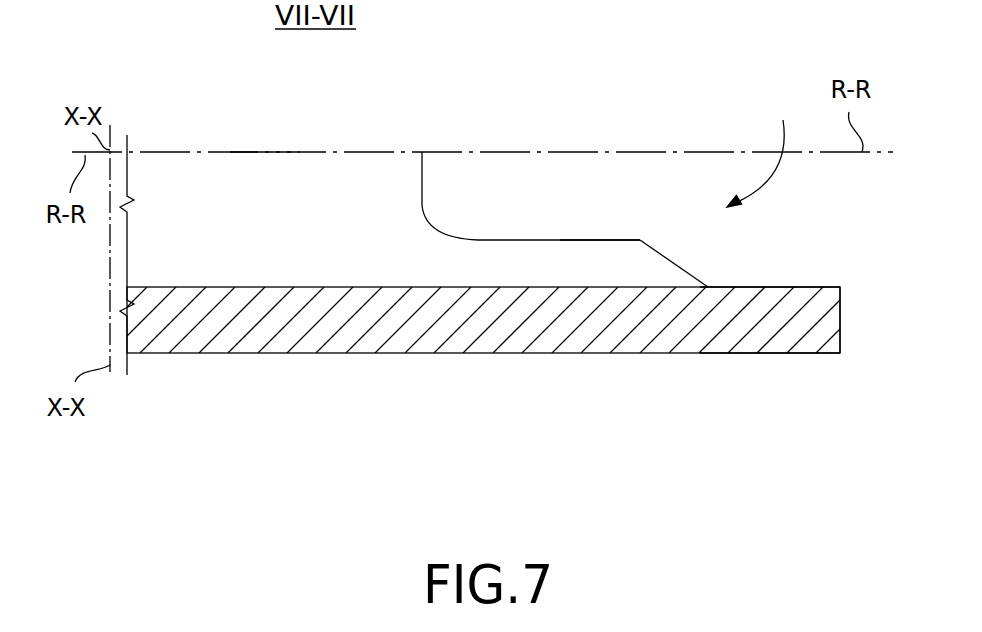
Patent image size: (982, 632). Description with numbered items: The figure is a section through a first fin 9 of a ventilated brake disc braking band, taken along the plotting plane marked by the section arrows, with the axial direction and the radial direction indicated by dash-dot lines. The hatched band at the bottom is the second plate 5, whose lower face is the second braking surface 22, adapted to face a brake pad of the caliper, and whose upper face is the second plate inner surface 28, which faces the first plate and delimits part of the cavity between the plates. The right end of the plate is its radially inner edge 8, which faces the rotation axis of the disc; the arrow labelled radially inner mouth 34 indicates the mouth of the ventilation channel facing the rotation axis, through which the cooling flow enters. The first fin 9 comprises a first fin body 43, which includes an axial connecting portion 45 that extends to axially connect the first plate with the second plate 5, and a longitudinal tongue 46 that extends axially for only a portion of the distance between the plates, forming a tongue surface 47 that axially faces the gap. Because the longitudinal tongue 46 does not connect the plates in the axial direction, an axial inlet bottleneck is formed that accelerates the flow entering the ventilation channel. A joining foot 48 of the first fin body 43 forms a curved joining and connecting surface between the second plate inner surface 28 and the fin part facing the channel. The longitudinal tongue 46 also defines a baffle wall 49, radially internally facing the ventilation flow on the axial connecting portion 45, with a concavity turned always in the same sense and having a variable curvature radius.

The second plate 5 is at (800, 327).
The radially inner edge 8 is at (840, 313).
The first fin 9 is at (178, 200).
The second braking surface 22 is at (730, 357).
The second plate inner surface 28 is at (799, 278).
The radially inner mouth 34 is at (783, 120).
The first fin body 43 is at (377, 190).
The axial connecting portion 45 is at (262, 190).
The longitudinal tongue 46 is at (485, 253).
The tongue surface 47 is at (561, 226).
The joining foot 48 is at (653, 268).
The baffle wall 49 is at (434, 197).